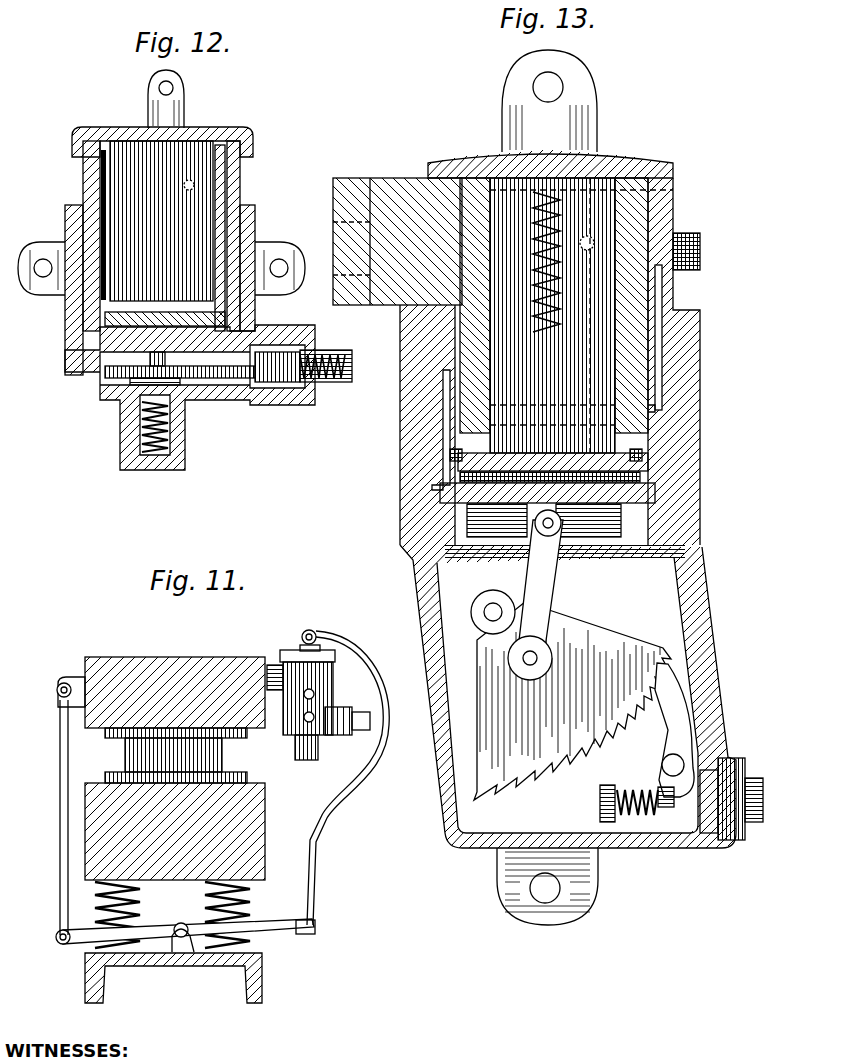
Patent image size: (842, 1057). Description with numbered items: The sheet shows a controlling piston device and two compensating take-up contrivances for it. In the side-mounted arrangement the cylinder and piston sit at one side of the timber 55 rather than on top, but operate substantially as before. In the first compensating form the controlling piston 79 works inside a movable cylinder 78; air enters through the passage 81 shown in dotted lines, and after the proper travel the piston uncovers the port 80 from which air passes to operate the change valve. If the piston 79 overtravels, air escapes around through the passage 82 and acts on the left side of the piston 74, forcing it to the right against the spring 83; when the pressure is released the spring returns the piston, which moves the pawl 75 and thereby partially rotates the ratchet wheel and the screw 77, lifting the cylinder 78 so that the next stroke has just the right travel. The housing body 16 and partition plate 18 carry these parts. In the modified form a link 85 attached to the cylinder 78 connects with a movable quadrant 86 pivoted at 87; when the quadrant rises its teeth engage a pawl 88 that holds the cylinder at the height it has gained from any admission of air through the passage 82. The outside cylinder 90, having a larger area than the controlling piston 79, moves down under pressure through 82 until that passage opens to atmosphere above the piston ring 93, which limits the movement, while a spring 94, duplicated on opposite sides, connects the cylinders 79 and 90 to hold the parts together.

In FIG. 12, the housing body 16 is at (100, 407).
In FIG. 12, the partition plate 18 is at (110, 343).
In FIG. 11, the timber 55 is at (58, 692).
In FIG. 12, the piston 74 is at (267, 400).
In FIG. 12, the pawl 75 is at (210, 379).
In FIG. 12, the screw 77 is at (170, 430).
In FIG. 13, the movable cylinder 78 is at (432, 488).
In FIG. 12, the controlling piston 79 is at (258, 212).
In FIG. 13, the controlling piston 79 is at (525, 345).
In FIG. 12, the port 80 is at (267, 252).
In FIG. 13, the port 80 is at (650, 406).
In FIG. 12, the passage 81 is at (192, 182).
In FIG. 12, the port or passage 82 is at (83, 320).
In FIG. 13, the port or passage 82 is at (448, 452).
In FIG. 12, the spring 83 is at (325, 380).
In FIG. 13, the spring 83 is at (686, 251).
In FIG. 13, the link 85 is at (547, 583).
In FIG. 13, the movable quadrant 86 is at (607, 640).
In FIG. 13, the pivot 87 is at (492, 606).
In FIG. 13, the pawl 88 is at (668, 742).
In FIG. 13, the outside cylinder 90 is at (405, 554).
In FIG. 13, the piston ring 93 is at (458, 469).
In FIG. 13, the spring 94 is at (425, 372).